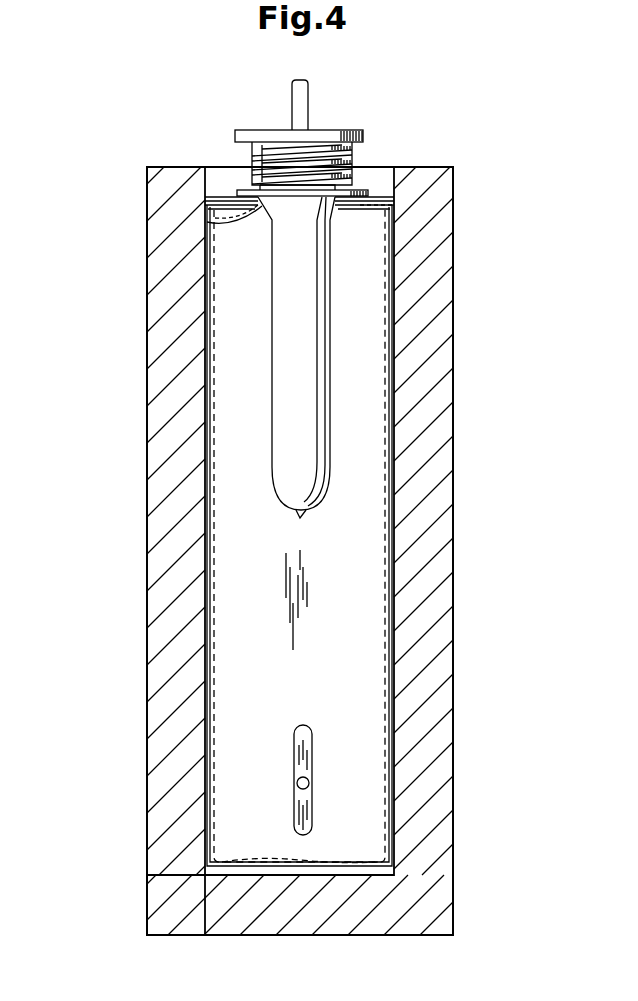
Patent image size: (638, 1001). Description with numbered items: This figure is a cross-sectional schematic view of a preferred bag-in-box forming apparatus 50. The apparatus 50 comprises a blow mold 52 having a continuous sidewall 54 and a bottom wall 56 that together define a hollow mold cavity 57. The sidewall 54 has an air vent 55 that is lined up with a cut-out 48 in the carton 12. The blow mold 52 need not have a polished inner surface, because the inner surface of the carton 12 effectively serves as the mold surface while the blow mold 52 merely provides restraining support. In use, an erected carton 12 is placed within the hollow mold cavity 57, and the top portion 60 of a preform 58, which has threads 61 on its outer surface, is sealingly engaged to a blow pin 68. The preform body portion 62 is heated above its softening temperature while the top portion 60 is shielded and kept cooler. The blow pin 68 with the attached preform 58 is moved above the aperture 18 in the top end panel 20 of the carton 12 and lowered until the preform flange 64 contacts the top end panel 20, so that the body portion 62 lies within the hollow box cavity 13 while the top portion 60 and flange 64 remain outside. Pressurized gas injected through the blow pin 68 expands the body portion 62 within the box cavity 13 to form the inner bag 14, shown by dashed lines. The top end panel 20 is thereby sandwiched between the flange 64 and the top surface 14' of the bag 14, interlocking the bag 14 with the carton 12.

The carton 12 is at (168, 363).
The hollow box cavity 13 is at (358, 542).
The inner plastic bag 14 is at (367, 535).
The top surface of inner bag 14' is at (434, 197).
The aperture 18 is at (203, 222).
The top end panel 20 is at (224, 196).
The cut-out 48 is at (300, 743).
The BIB forming apparatus 50 is at (485, 168).
The blow mold 52 is at (117, 910).
The sidewall 54 is at (172, 503).
The air vent 55 is at (309, 783).
The bottom wall 56 is at (372, 925).
The hollow mold cavity 57 is at (368, 170).
The preform 58 is at (287, 258).
The top portion of preform 60 is at (255, 172).
The threads 61 is at (273, 160).
The preform body portion 62 is at (282, 310).
The preform flange 64 is at (353, 193).
The blow pin 68 is at (302, 98).